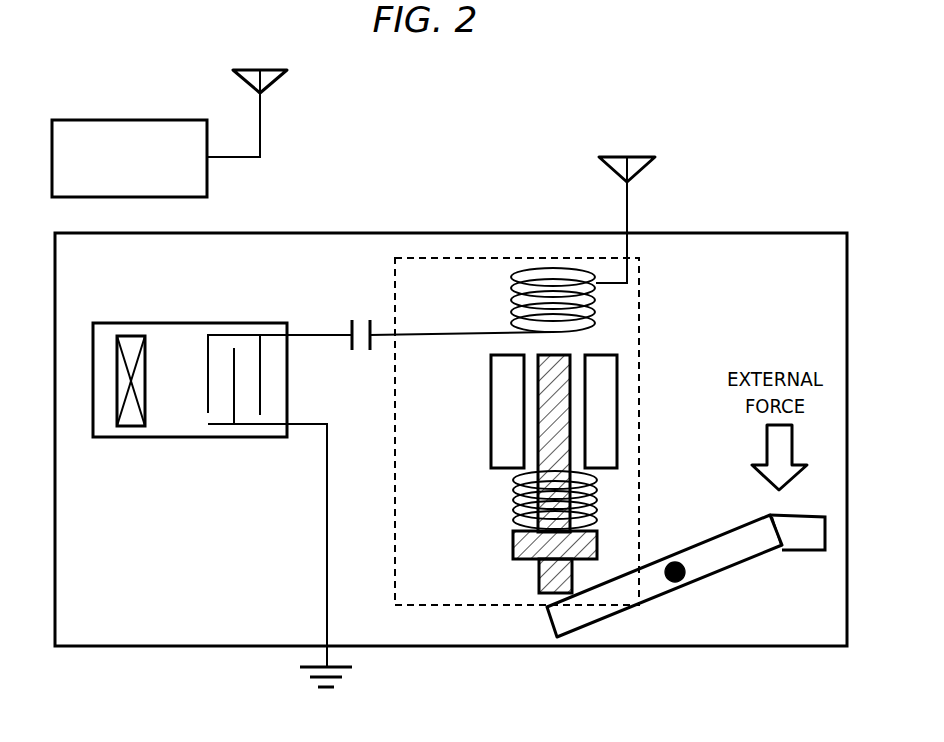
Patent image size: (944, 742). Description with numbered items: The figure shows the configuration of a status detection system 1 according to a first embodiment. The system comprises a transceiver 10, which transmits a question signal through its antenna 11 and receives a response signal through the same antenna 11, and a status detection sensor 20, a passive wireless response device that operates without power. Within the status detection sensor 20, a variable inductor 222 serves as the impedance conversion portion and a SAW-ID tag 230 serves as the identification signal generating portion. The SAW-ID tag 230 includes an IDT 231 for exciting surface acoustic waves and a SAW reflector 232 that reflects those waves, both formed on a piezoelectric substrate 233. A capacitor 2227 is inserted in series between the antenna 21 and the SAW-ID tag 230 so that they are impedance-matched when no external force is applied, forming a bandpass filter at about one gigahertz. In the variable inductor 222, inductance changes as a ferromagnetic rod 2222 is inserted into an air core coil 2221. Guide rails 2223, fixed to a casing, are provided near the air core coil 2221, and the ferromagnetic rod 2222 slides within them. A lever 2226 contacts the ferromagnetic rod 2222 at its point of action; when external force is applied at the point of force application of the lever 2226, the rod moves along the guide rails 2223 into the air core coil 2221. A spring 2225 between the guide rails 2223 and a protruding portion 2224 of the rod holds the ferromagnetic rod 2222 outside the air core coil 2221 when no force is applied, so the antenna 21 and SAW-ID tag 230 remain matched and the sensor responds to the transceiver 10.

The status detection system 1 is at (392, 184).
The transceiver 10 is at (118, 118).
The antenna 11 is at (234, 70).
The status detection sensor 20 is at (478, 232).
The antenna 21 is at (622, 156).
The variable inductor 222 is at (641, 318).
The air core coil 2221 is at (510, 305).
The ferromagnetic rod 2222 is at (538, 588).
The guide rails 2223 is at (490, 422).
The protruding portion 2224 is at (513, 541).
The spring 2225 is at (513, 497).
The lever 2226 is at (701, 542).
The capacitor 2227 is at (357, 352).
The SAW-ID tag 230 is at (100, 438).
The IDT 231 is at (262, 423).
The SAW reflector 232 is at (128, 427).
The piezoelectric substrate 233 is at (182, 425).